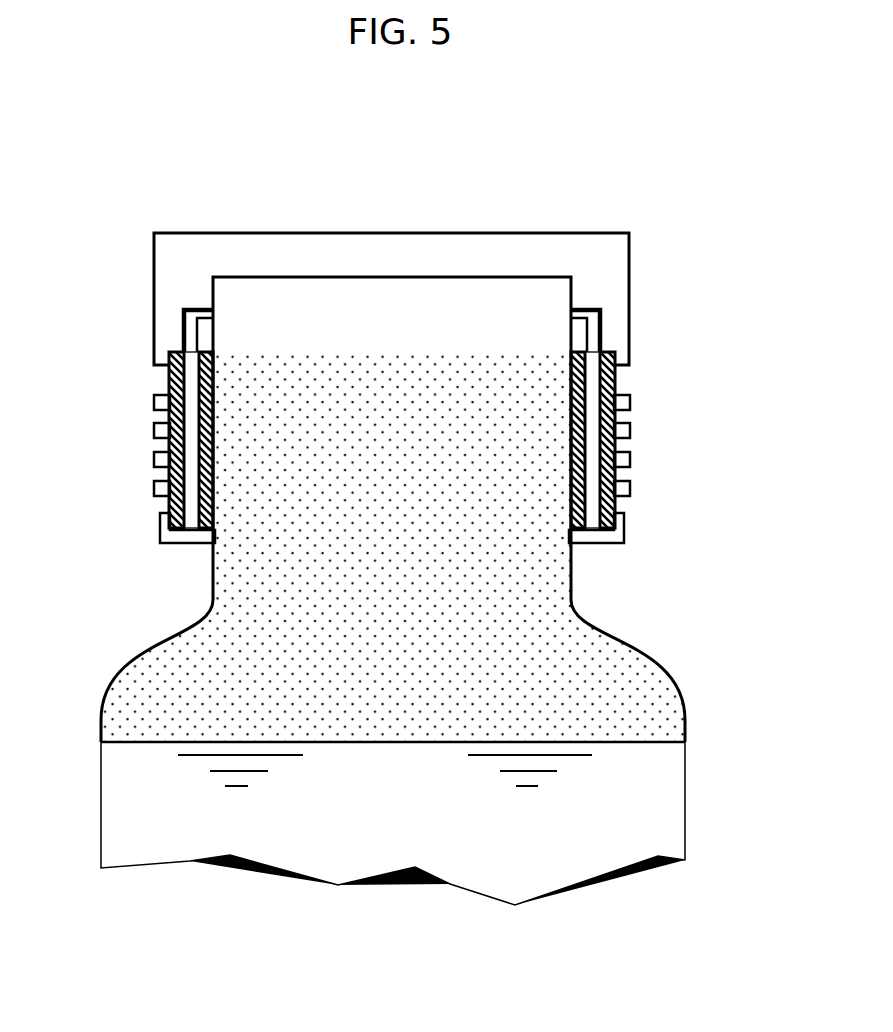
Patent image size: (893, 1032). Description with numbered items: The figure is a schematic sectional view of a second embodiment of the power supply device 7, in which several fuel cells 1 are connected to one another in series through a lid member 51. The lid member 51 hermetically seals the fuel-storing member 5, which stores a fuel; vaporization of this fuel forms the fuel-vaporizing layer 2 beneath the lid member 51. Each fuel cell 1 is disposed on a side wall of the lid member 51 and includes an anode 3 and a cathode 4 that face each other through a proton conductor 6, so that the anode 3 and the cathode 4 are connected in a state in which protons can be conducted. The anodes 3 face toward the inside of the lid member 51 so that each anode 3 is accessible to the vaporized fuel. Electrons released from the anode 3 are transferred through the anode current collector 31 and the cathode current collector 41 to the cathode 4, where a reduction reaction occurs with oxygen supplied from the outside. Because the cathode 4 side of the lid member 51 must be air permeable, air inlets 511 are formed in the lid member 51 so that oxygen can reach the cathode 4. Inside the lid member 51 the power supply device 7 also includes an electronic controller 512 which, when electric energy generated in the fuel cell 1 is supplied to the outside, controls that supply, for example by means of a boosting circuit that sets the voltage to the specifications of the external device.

The power supply device 7 is at (40, 137).
The lid member 51 is at (520, 203).
The air inlets 511 is at (140, 422).
The electronic controller 512 is at (382, 297).
The fuel cell 1 is at (70, 557).
The fuel-vaporizing layer 2 is at (412, 601).
The anode 3 is at (166, 514).
The anode current collector 31 is at (194, 319).
The cathode 4 is at (169, 380).
The cathode current collector 41 is at (186, 308).
The fuel-storing member 5 is at (668, 797).
The proton conductor 6 is at (191, 443).